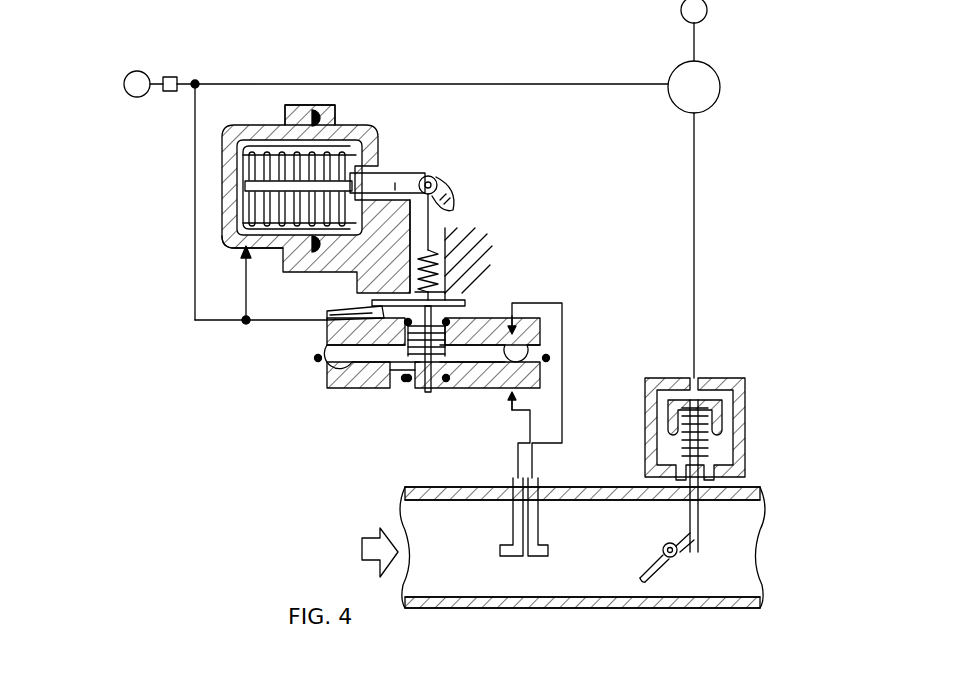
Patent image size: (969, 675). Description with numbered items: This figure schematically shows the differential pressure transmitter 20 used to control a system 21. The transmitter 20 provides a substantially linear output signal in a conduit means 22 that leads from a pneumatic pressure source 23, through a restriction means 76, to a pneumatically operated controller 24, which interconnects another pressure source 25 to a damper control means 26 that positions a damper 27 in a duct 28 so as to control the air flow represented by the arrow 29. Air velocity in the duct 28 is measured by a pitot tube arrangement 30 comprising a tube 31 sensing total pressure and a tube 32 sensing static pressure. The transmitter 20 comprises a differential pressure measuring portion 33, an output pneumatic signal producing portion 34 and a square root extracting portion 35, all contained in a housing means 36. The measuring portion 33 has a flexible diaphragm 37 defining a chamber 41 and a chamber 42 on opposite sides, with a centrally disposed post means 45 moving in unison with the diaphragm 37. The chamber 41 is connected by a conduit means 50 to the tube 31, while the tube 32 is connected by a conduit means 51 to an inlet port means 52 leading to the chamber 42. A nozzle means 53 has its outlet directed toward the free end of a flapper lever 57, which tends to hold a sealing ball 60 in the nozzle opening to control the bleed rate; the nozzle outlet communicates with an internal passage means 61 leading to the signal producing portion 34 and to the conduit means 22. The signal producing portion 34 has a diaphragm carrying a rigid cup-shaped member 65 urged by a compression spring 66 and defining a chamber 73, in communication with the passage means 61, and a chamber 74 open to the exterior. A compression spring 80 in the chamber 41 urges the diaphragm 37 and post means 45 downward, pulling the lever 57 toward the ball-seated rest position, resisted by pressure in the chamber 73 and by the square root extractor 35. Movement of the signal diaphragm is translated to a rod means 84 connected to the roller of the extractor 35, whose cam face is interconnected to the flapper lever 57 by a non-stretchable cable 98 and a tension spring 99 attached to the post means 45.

The differential pressure transmitter 20 is at (534, 242).
The system 21 is at (758, 128).
The conduit means 22 is at (513, 83).
The pneumatic pressure source 23 is at (124, 84).
The pneumatically operated controller 24 is at (722, 76).
The pressure source 25 is at (708, 11).
The damper control means 26 is at (755, 430).
The damper 27 is at (650, 559).
The duct 28 is at (578, 488).
The air flow arrow 29 is at (368, 548).
The pitot tube arrangement 30 is at (507, 505).
The tube 31 is at (513, 524).
The tube 32 is at (540, 542).
The differential pressure measuring portion 33 is at (499, 296).
The output pneumatic signal producing portion 34 is at (364, 122).
The square root extracting portion 35 is at (458, 181).
The housing means 36 is at (460, 235).
The flexible diaphragm 37 is at (339, 374).
The chamber 41 is at (340, 356).
The chamber 42 is at (374, 368).
The post means 45 is at (407, 370).
The conduit means 50 is at (565, 344).
The conduit means 51 is at (530, 429).
The inlet port means 52 is at (536, 387).
The nozzle means 53 is at (350, 312).
The flapper lever 57 is at (385, 306).
The sealing ball 60 is at (377, 306).
The internal passage means 61 is at (246, 283).
The cup-shaped member 65 is at (262, 152).
The compression spring 66 is at (358, 160).
The chamber 73 is at (240, 232).
The chamber 74 is at (330, 124).
The restriction means 76 is at (177, 77).
The compression spring 80 is at (452, 352).
The rod means 84 is at (400, 183).
The cable 98 is at (420, 243).
The tension spring 99 is at (440, 272).